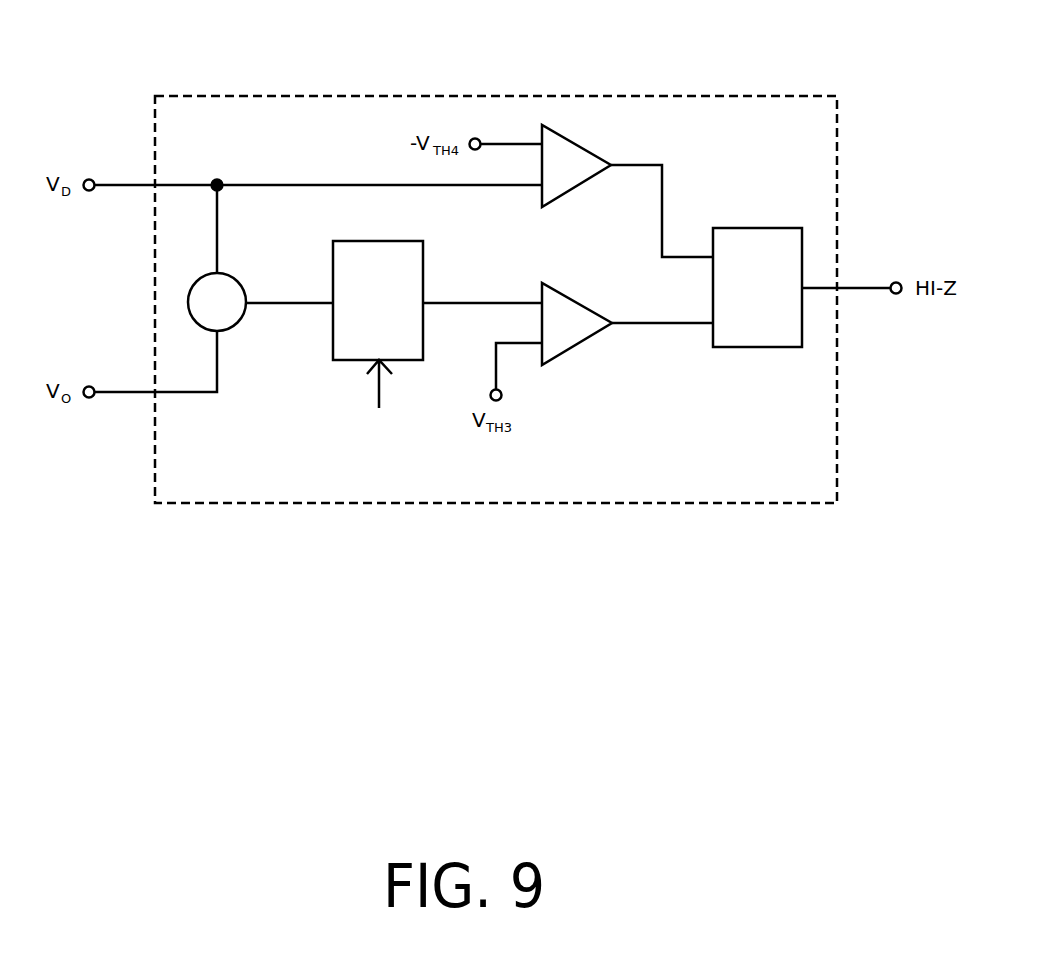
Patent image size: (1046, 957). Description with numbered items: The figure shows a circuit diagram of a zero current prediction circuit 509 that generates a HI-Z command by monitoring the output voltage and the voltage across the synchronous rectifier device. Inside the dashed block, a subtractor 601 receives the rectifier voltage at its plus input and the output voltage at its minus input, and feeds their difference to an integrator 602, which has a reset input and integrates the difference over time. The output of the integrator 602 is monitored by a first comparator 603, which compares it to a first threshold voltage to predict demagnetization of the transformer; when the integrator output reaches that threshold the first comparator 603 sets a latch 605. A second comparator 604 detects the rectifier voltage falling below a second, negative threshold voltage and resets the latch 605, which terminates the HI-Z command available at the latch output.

The zero current prediction circuit 509 is at (462, 79).
The subtractor 601 is at (238, 278).
The integrator 602 is at (333, 350).
The first comparator 603 is at (573, 346).
The second comparator 604 is at (572, 190).
The latch 605 is at (743, 347).